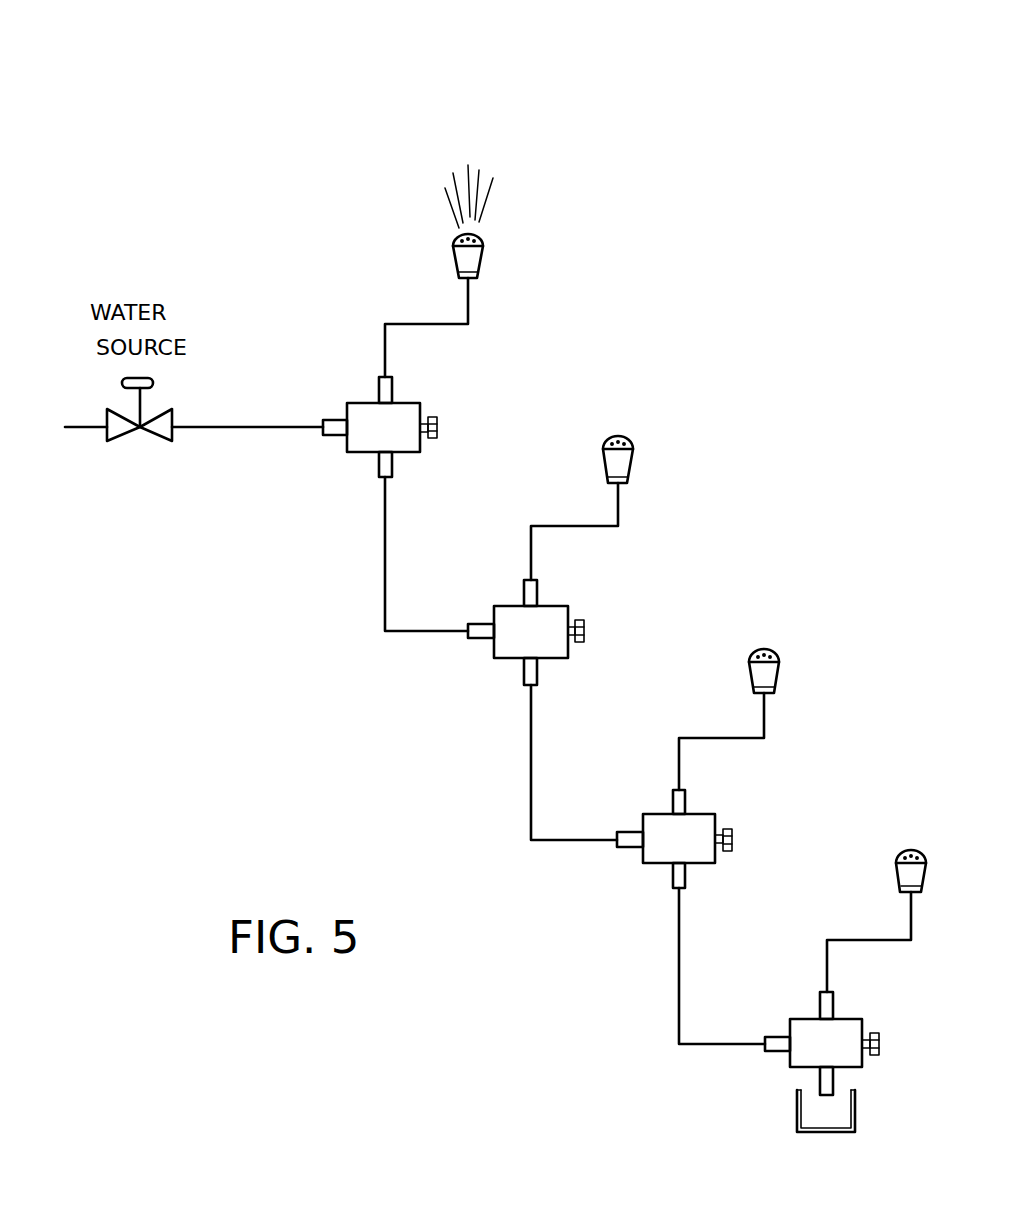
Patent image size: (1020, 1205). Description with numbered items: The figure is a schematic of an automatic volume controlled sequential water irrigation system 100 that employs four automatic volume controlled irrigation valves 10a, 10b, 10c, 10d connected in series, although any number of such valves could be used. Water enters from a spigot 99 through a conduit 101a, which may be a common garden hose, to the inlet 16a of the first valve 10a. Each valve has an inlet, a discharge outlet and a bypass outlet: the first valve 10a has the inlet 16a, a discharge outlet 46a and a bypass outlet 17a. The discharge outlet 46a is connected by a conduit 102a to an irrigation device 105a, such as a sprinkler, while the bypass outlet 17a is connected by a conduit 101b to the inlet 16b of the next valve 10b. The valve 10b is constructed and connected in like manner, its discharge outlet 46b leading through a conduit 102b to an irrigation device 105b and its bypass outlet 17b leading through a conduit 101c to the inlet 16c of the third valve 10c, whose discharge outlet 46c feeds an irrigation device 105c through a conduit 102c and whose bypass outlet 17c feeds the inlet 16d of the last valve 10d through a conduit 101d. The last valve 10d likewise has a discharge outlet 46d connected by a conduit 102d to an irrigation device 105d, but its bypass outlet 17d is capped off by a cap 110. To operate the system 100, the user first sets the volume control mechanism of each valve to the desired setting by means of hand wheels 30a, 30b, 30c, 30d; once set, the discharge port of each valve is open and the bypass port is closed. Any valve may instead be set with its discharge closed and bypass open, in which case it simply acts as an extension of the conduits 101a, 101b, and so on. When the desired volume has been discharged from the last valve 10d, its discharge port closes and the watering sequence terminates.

The automatic volume controlled sequential water irrigation system 100 is at (537, 122).
The spigot 99 is at (160, 410).
The conduit 101a is at (203, 428).
The conduit 101b is at (385, 568).
The conduit 101c is at (531, 775).
The conduit 101d is at (679, 968).
The irrigation valve 10a is at (350, 454).
The irrigation valve 10b is at (494, 660).
The irrigation valve 10c is at (650, 865).
The irrigation valve 10d is at (790, 1062).
The inlet 16a is at (336, 420).
The inlet 16b is at (482, 626).
The inlet 16c is at (632, 832).
The inlet 16d is at (779, 1036).
The bypass outlet 17a is at (392, 466).
The bypass outlet 17b is at (540, 668).
The bypass outlet 17c is at (687, 868).
The bypass outlet 17d is at (834, 1077).
The discharge outlet 46a is at (392, 388).
The discharge outlet 46b is at (538, 592).
The discharge outlet 46c is at (686, 798).
The discharge outlet 46d is at (836, 995).
The hand wheel 30a is at (437, 427).
The hand wheel 30b is at (582, 630).
The hand wheel 30c is at (735, 831).
The hand wheel 30d is at (880, 1040).
The conduit 102a is at (468, 300).
The conduit 102b is at (619, 502).
The conduit 102c is at (765, 718).
The conduit 102d is at (910, 907).
The irrigation device 105a is at (482, 240).
The irrigation device 105b is at (633, 445).
The irrigation device 105c is at (777, 658).
The irrigation device 105d is at (905, 848).
The cap 110 is at (797, 1122).